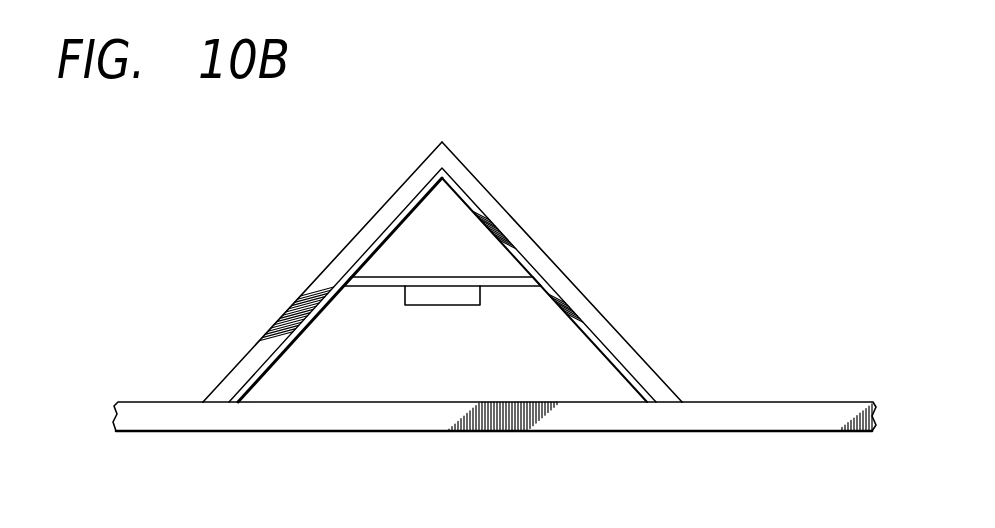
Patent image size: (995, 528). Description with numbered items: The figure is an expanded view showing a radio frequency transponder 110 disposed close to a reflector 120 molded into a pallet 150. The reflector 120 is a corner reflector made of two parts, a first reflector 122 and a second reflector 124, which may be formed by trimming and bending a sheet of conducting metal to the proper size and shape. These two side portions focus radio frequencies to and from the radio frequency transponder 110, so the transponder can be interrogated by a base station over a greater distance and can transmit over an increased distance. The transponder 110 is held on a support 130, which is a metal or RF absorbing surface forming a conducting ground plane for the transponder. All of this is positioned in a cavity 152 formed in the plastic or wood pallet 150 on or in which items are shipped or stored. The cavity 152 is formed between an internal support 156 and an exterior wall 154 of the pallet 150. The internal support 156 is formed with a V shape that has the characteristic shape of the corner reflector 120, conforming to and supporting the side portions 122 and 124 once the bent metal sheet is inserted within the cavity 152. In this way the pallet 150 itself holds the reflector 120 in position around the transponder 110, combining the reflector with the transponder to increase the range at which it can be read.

The radio frequency transponder 110 is at (440, 306).
The reflector 120 is at (518, 258).
The first reflector 122 is at (393, 218).
The second reflector 124 is at (480, 208).
The support 130 is at (378, 277).
The pallet 150 is at (825, 398).
The cavity 152 is at (600, 377).
The exterior wall 154 is at (753, 431).
The internal support 156 is at (608, 330).